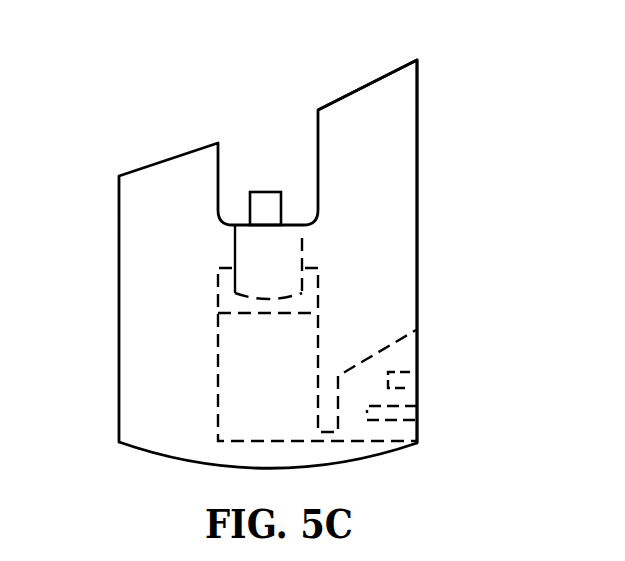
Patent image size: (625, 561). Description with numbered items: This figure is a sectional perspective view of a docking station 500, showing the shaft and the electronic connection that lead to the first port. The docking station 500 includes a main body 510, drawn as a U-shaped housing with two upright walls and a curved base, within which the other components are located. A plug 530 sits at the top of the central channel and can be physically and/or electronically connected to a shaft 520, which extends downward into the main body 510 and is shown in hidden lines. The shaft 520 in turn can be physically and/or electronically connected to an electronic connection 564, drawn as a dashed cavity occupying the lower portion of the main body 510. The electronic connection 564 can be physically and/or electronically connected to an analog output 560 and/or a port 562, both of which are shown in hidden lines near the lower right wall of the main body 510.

The docking station 500 is at (428, 85).
The main body 510 is at (373, 223).
The shaft 520 is at (275, 267).
The plug 530 is at (268, 185).
The analog output 560 is at (408, 379).
The port 562 is at (403, 412).
The electronic connection 564 is at (250, 367).